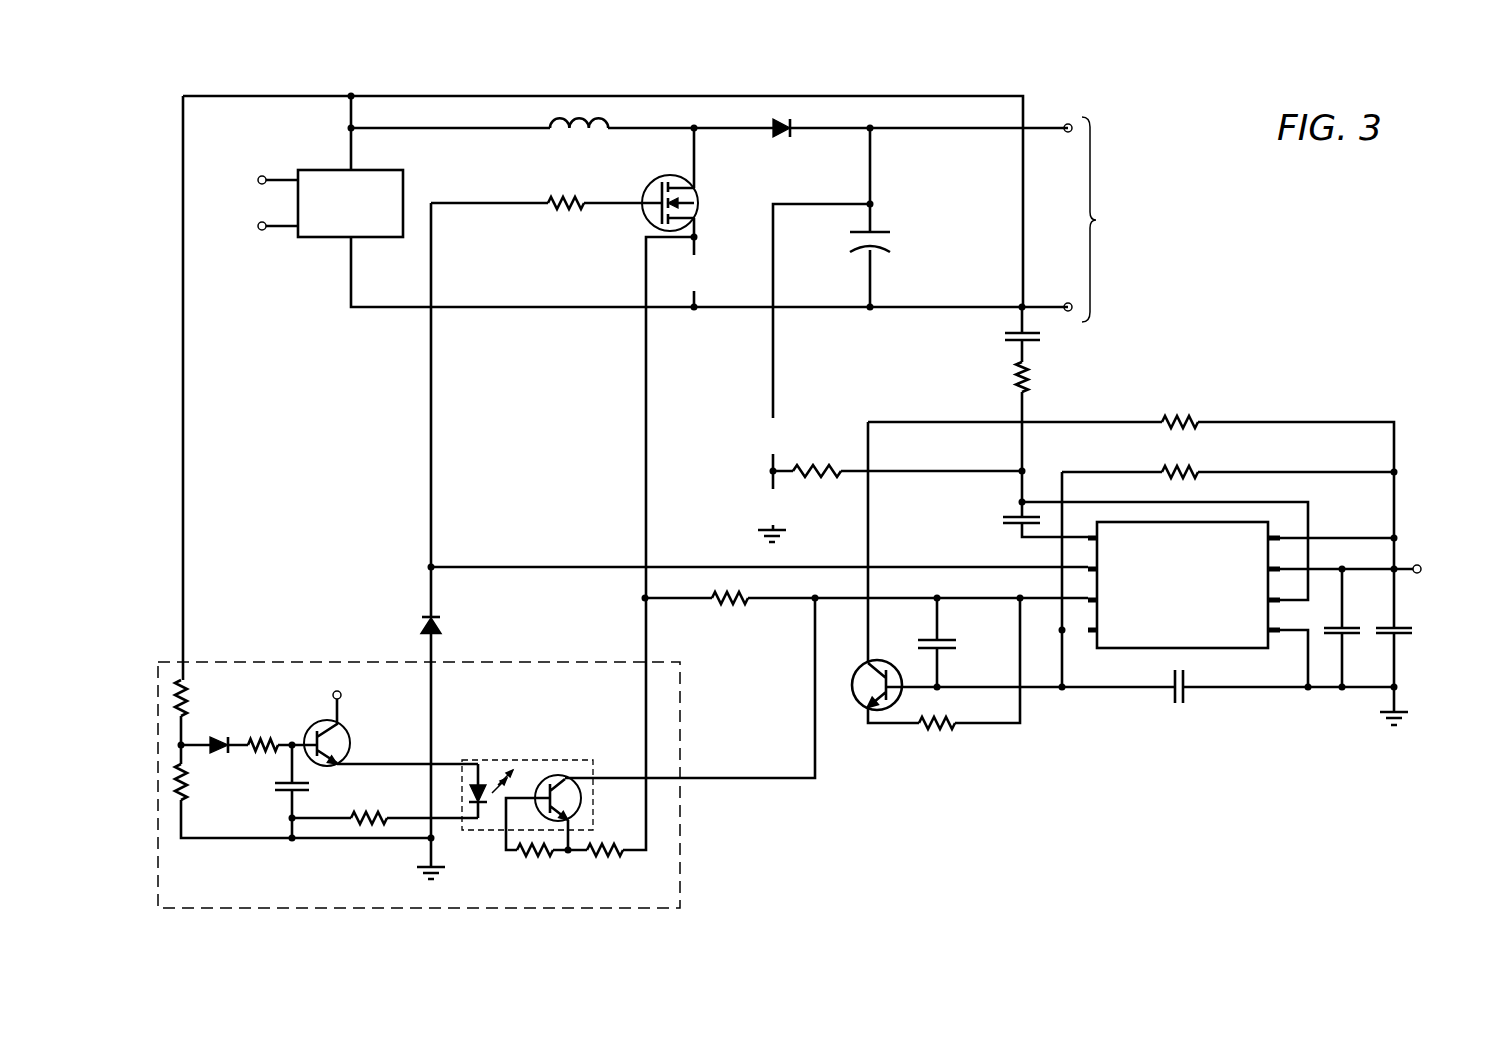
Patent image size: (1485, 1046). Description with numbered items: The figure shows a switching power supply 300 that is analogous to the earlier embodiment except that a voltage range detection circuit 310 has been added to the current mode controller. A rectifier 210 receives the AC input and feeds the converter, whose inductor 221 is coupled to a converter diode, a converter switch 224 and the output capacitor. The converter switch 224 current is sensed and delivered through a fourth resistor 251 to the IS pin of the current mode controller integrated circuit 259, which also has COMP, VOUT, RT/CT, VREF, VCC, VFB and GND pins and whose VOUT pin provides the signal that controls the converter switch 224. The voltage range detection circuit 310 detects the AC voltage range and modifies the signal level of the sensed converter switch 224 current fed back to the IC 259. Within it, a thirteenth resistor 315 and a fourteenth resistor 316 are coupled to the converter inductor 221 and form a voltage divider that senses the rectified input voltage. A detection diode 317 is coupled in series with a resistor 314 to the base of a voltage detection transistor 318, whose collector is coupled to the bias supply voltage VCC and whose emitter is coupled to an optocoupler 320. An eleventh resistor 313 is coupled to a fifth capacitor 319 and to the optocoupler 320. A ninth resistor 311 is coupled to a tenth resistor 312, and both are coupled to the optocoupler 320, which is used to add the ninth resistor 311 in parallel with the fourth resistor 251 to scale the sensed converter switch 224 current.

The switching power supply 300 is at (1252, 232).
The rectifier 210 is at (308, 170).
The inductor 221 is at (578, 135).
The converter switch 224 is at (700, 200).
The fourth resistor 251 is at (730, 613).
The current mode controller integrated circuit 259 is at (1135, 649).
The voltage range detection circuit 310 is at (246, 662).
The ninth resistor 311 is at (604, 858).
The tenth resistor 312 is at (524, 858).
The eleventh resistor 313 is at (356, 812).
The resistor 314 is at (265, 738).
The thirteenth resistor 315 is at (188, 796).
The fourteenth resistor 316 is at (190, 700).
The detection diode 317 is at (222, 752).
The voltage detection transistor 318 is at (350, 736).
The fifth capacitor 319 is at (286, 796).
The optocoupler 320 is at (480, 760).